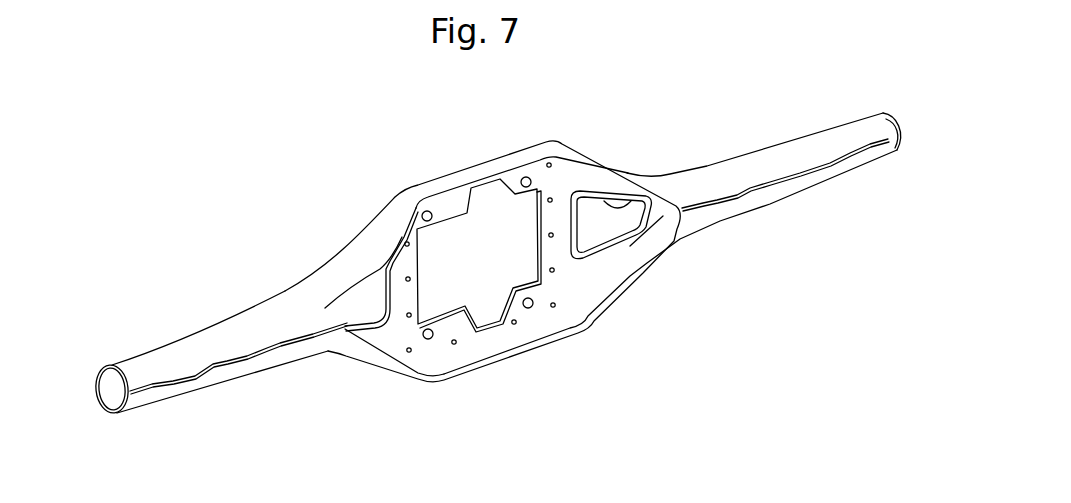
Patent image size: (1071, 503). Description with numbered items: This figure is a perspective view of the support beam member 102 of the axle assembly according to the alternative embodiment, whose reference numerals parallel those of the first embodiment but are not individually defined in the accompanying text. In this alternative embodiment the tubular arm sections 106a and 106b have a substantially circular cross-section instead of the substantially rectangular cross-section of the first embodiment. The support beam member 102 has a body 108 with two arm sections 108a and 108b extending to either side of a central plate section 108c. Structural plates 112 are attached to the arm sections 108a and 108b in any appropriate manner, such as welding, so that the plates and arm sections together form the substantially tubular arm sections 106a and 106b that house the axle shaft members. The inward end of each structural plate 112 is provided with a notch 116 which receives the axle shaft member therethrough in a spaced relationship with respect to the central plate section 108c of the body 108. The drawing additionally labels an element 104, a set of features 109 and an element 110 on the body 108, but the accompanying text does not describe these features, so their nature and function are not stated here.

The bracket body 102 is at (352, 212).
The rim flange 104 is at (478, 153).
The first tubular arm 106a is at (789, 131).
The second tubular arm 106b is at (163, 335).
The base plate 108 is at (396, 380).
The first arm end 108a is at (880, 171).
The second arm end 108b is at (113, 393).
The plate flat region 108c is at (570, 285).
The mounting holes 109 is at (528, 177).
The central plate 110 is at (534, 265).
The slot opening 112 is at (629, 200).
The weld seam 116 is at (213, 364).